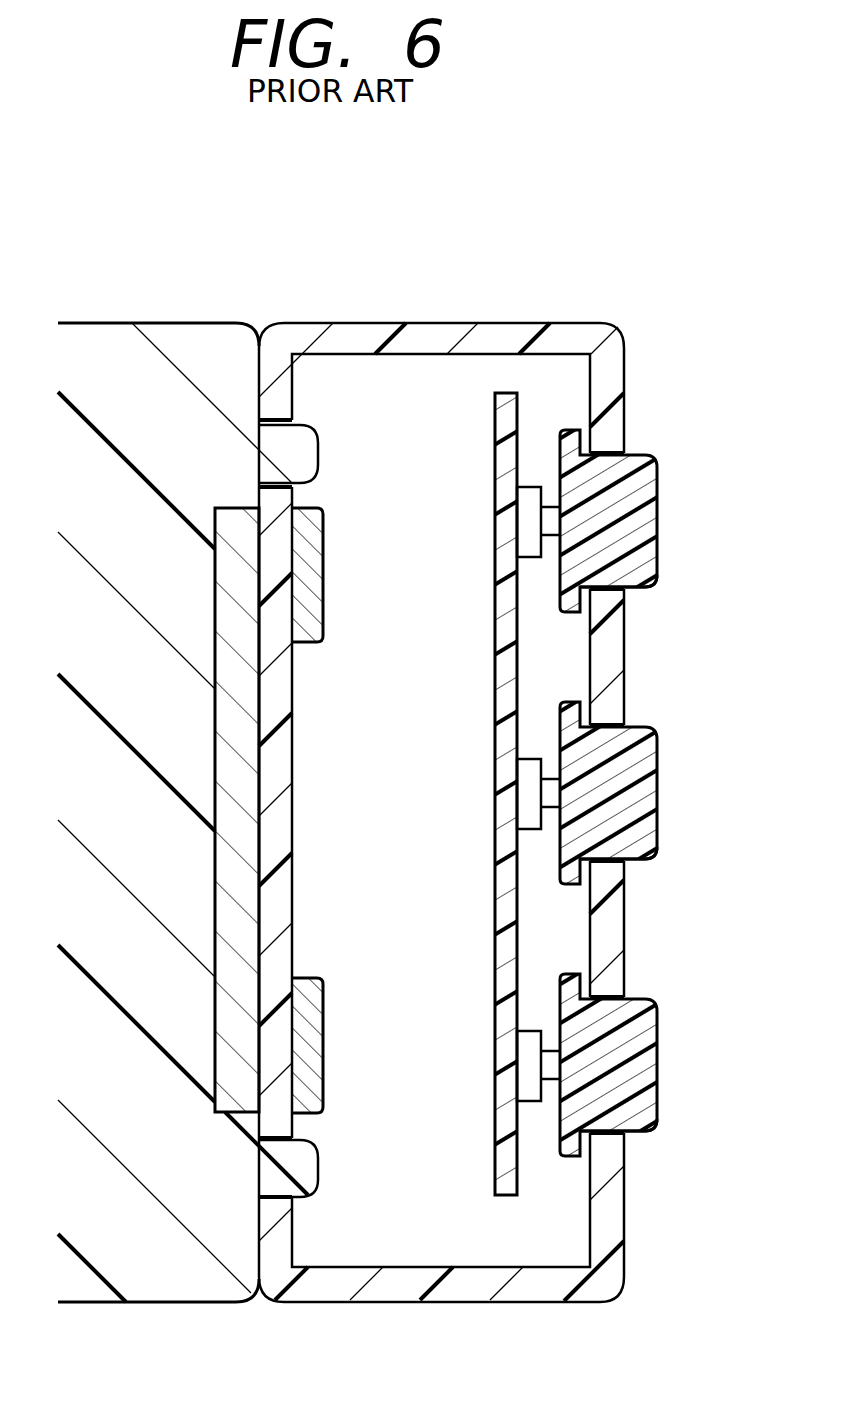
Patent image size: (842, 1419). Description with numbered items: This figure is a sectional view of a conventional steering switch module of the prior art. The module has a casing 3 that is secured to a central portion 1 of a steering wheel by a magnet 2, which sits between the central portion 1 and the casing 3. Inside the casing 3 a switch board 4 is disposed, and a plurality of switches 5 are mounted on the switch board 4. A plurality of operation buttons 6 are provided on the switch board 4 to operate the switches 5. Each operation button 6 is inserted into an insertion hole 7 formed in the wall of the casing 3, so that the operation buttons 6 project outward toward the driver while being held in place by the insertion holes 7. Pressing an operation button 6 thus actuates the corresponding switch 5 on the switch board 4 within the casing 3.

The central portion 1 is at (188, 342).
The magnet 2 is at (315, 622).
The casing 3 is at (573, 342).
The switch board 4 is at (495, 833).
The switches 5 is at (523, 527).
The operation buttons 6 is at (657, 497).
The insertion holes 7 is at (650, 578).